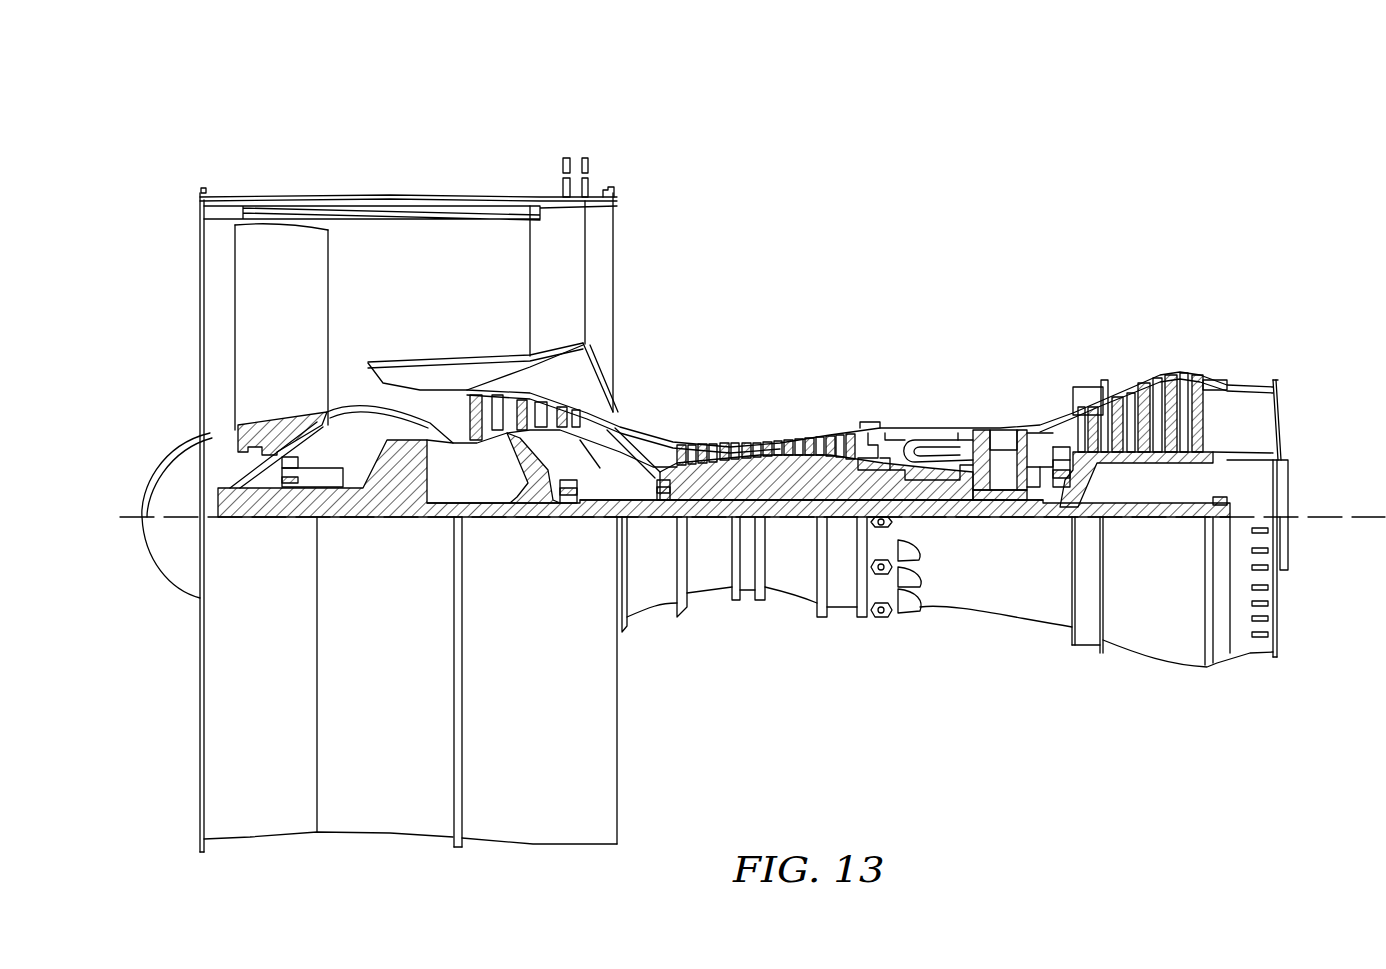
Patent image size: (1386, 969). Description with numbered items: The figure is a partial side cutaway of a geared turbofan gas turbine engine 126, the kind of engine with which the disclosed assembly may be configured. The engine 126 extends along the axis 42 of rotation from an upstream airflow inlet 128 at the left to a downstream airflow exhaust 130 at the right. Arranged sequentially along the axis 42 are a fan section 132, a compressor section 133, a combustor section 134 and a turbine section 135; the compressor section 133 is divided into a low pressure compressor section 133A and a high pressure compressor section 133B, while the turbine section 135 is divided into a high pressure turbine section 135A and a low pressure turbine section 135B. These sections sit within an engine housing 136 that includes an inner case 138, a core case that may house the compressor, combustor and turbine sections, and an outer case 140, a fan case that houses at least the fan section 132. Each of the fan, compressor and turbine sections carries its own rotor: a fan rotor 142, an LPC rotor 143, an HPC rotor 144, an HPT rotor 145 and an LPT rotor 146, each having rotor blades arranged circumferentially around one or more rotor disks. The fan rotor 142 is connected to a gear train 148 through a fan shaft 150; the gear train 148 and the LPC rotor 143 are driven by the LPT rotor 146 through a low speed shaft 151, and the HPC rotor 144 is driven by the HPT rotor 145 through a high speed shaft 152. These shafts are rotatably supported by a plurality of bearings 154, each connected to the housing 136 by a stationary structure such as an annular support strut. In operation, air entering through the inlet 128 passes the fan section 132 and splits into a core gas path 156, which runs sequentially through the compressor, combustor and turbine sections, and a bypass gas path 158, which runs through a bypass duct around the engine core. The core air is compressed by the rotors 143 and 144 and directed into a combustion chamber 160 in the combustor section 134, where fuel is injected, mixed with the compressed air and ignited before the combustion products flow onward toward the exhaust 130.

The geared turbofan gas turbine engine 126 is at (172, 180).
The airflow inlet 128 is at (202, 268).
The airflow exhaust 130 is at (1282, 413).
The fan section 132 is at (375, 175).
The compressor section 133 is at (842, 113).
The low pressure compressor section 133A is at (618, 161).
The high pressure compressor section 133B is at (838, 354).
The combustor section 134 is at (968, 352).
The turbine section 135 is at (1237, 284).
The high pressure turbine section 135A is at (1052, 352).
The low pressure turbine section 135B is at (1237, 352).
The engine housing 136 is at (640, 636).
The inner case 138 is at (842, 618).
The outer case 140 is at (564, 846).
The fan rotor 142 is at (202, 437).
The LPC rotor 143 is at (510, 470).
The HPC rotor 144 is at (787, 470).
The HPT rotor 145 is at (1005, 497).
The LPT rotor 146 is at (1147, 458).
The gear train 148 is at (417, 517).
The fan shaft 150 is at (266, 517).
The low speed shaft 151 is at (1157, 518).
The high speed shaft 152 is at (918, 500).
The bearings 154 is at (307, 505).
The core gas path 156 is at (636, 448).
The bypass gas path 158 is at (468, 292).
The combustion chamber 160 is at (928, 443).
The axis 42 is at (1333, 517).